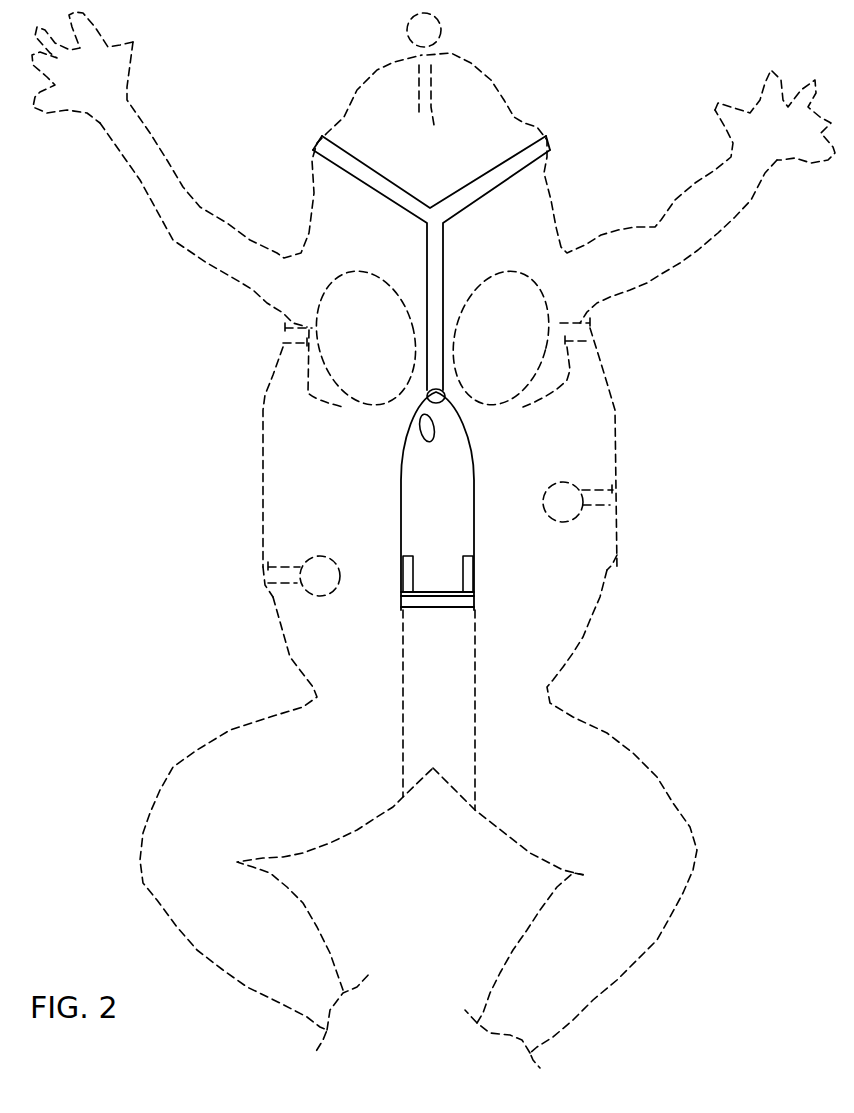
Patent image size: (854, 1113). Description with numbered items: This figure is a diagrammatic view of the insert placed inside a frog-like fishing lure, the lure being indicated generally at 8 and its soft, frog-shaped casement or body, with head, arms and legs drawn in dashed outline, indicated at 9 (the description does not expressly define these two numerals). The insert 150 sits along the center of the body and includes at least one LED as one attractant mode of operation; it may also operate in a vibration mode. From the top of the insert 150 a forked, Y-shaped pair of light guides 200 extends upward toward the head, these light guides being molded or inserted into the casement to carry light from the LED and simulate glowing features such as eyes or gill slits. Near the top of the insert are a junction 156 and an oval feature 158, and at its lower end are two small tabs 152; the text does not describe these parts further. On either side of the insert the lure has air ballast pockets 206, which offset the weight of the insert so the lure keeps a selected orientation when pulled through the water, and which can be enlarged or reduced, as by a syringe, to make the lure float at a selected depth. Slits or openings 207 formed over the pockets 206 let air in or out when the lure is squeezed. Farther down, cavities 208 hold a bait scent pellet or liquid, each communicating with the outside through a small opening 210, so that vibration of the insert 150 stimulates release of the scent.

The harness assembly 8 is at (652, 101).
The user body 9 is at (547, 683).
The light guides 200 is at (504, 163).
The insert 150 is at (402, 513).
The attachment tabs 152 is at (477, 572).
The strap connection 156 is at (445, 395).
The button 158 is at (420, 427).
The air ballast pockets 206 is at (263, 407).
The slits or openings 207 is at (283, 313).
The cavities 208 is at (263, 523).
The small opening 210 is at (267, 602).